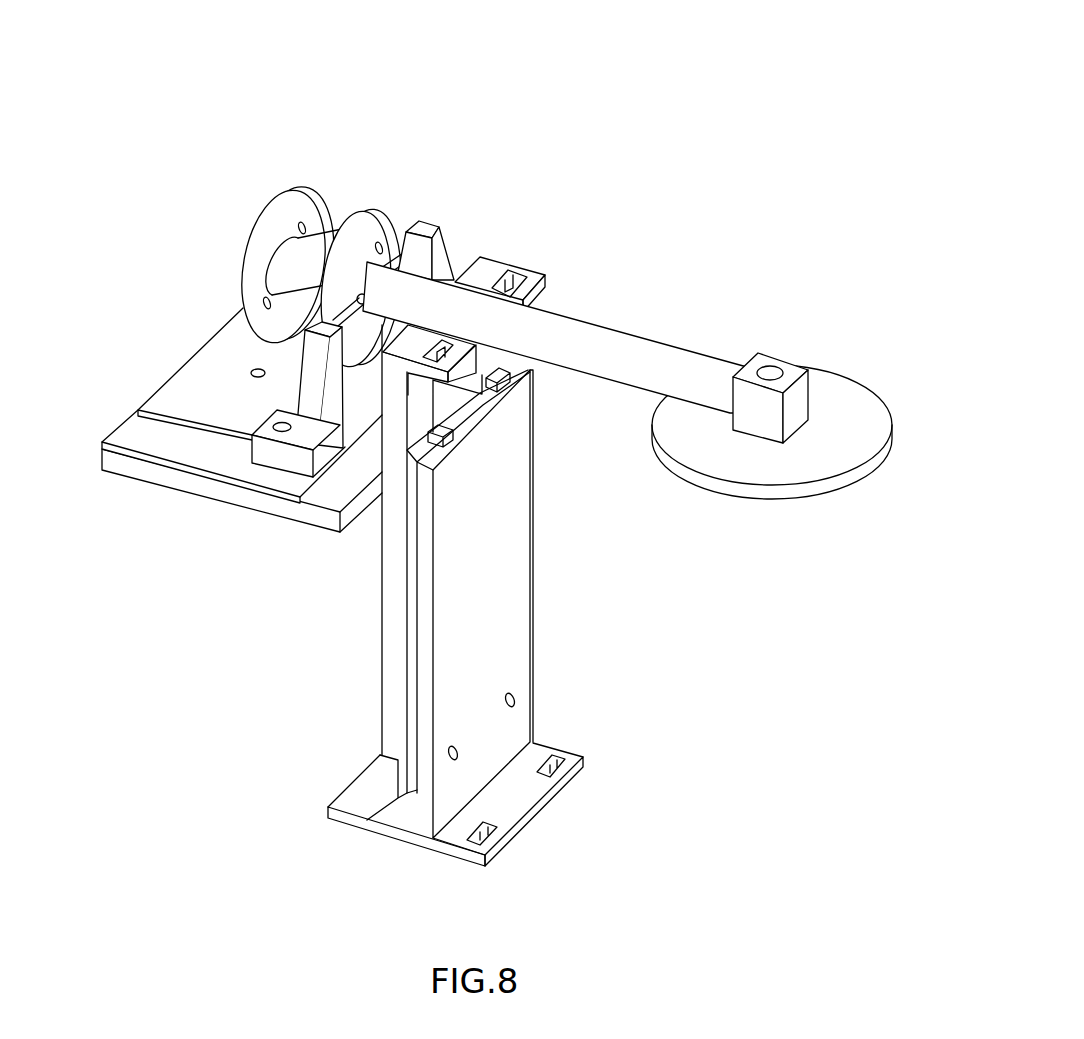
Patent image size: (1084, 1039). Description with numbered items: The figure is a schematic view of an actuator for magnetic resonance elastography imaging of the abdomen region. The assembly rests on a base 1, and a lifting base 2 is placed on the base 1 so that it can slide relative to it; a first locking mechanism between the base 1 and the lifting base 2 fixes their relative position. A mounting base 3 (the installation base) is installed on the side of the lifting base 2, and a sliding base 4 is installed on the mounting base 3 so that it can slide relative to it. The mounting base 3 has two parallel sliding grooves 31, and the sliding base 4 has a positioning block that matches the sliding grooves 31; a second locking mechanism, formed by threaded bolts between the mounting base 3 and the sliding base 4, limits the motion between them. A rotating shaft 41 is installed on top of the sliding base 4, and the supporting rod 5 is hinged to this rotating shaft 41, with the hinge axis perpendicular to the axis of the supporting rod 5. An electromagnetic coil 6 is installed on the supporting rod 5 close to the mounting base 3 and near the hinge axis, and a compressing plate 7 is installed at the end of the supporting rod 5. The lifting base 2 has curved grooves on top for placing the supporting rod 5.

The base 1 is at (503, 632).
The lifting base 2 is at (393, 640).
The installation base 3 is at (166, 477).
The sliding grooves 31 is at (168, 418).
The sliding base 4 is at (433, 227).
The rotating shaft 41 is at (403, 232).
The supporting rod 5 is at (675, 355).
The coil 6 is at (307, 258).
The compressing plate 7 is at (853, 412).